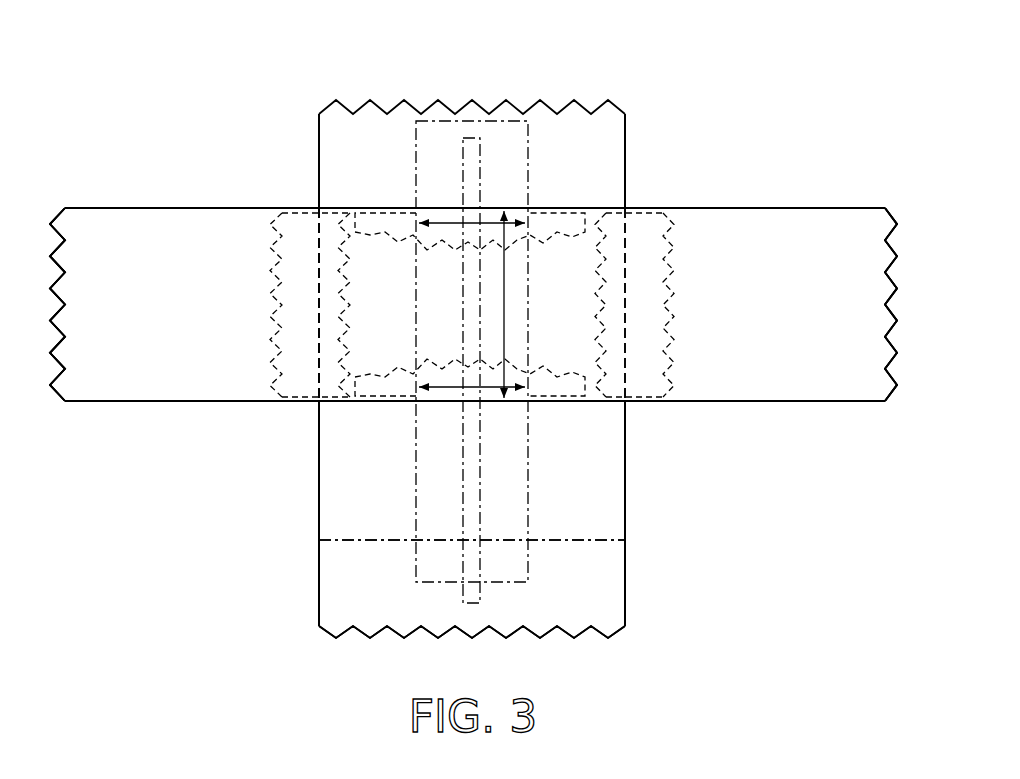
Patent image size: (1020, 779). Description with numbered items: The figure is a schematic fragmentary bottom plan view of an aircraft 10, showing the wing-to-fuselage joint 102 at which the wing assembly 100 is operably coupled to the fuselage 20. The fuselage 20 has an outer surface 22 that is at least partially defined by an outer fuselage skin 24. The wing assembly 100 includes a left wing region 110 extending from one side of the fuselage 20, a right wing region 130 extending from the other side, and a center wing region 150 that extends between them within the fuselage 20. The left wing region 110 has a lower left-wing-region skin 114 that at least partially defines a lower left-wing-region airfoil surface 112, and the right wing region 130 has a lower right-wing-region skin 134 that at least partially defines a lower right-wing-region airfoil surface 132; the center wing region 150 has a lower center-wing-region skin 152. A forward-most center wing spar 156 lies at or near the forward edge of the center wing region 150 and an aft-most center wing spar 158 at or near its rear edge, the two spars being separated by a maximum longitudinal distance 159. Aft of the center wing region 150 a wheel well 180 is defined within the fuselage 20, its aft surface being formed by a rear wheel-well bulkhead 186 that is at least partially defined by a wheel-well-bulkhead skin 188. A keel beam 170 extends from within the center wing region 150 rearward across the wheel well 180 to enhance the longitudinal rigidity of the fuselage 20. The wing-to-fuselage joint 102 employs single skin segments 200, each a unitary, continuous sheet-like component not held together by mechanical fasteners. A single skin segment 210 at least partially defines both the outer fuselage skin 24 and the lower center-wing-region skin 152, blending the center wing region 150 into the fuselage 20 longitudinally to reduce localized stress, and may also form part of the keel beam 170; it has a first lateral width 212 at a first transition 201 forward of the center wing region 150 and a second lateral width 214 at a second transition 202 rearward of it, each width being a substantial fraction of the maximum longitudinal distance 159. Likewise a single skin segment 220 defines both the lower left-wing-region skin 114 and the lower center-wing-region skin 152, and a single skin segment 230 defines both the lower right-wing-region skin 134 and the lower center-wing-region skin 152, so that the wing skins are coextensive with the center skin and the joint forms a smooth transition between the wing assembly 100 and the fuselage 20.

The aircraft 10 is at (277, 62).
The fuselage 20 is at (637, 128).
The outer surface 22 is at (630, 165).
The outer fuselage skin 24 is at (625, 188).
The wing assembly 100 is at (753, 165).
The wing-to-fuselage joint 102 is at (305, 193).
The left wing region 110 is at (780, 198).
The lower left-wing-region airfoil surface 112 is at (740, 388).
The lower left-wing-region skin 114 is at (815, 385).
The right wing region 130 is at (168, 198).
The lower right-wing-region airfoil surface 132 is at (145, 387).
The lower right-wing-region skin 134 is at (217, 383).
The center wing region 150 is at (367, 403).
The lower center-wing-region skin 152 is at (352, 207).
The forward-most center wing spar 156 is at (540, 207).
The aft-most center wing spar 158 is at (543, 403).
The maximum longitudinal distance 159 is at (505, 302).
The keel beam 170 is at (480, 168).
The wheel well 180 is at (617, 503).
The rear wheel-well bulkhead 186 is at (540, 548).
The wheel-well-bulkhead skin 188 is at (542, 545).
The single skin segment 200 is at (466, 272).
The first transition 201 is at (408, 200).
The second transition 202 is at (408, 408).
The single skin segment 210 is at (530, 168).
The first lateral width 212 is at (452, 226).
The second lateral width 214 is at (452, 385).
The single skin segment 220 is at (670, 252).
The single skin segment 230 is at (273, 248).